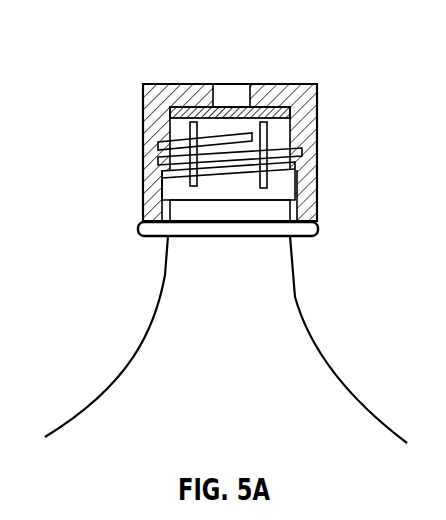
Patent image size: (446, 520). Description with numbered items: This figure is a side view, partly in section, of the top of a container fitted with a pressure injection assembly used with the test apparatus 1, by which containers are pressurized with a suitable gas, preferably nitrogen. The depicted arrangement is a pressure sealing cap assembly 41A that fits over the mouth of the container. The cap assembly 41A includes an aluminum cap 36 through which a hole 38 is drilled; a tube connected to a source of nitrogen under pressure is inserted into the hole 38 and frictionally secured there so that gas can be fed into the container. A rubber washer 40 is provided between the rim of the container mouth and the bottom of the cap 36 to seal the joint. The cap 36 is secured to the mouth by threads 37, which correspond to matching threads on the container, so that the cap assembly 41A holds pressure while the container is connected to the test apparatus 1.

The test apparatus 1 is at (300, 308).
The aluminum cap 36 is at (132, 148).
The threads 37 is at (317, 142).
The hole 38 is at (232, 74).
The rubber washer 40 is at (190, 112).
The cap assembly 41A is at (133, 210).